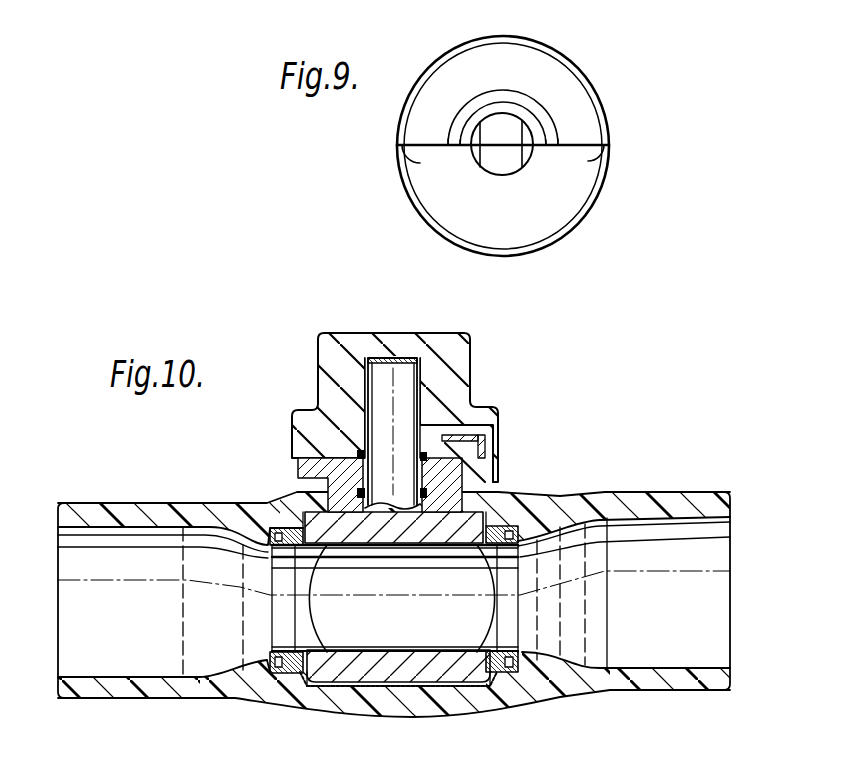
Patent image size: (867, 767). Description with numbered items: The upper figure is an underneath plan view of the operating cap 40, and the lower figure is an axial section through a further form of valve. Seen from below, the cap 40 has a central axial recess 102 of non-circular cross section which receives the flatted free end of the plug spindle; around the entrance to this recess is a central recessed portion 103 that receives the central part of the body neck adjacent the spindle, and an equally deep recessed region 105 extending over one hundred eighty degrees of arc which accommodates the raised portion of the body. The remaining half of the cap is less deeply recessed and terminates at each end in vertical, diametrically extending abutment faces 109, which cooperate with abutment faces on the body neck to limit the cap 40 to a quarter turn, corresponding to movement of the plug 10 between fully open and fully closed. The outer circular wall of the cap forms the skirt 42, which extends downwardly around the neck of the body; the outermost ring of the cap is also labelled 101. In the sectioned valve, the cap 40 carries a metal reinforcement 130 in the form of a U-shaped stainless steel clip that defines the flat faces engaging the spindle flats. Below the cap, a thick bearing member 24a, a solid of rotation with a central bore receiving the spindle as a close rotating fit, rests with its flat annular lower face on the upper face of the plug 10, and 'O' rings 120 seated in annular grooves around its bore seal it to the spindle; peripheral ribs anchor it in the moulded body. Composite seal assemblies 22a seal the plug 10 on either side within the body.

In FIG. 10, the plug 10 is at (298, 701).
In FIG. 10, the composite seal assemblies 22a is at (270, 577).
In FIG. 10, the bearing member 24a is at (460, 483).
In FIG. 9, the operating cap 40 is at (610, 120).
In FIG. 10, the operating cap 40 is at (473, 351).
In FIG. 9, the skirt 42 is at (407, 96).
In FIG. 9, the outer ring 101 is at (535, 55).
In FIG. 9, the axial recess 102 is at (496, 164).
In FIG. 9, the central recessed portion 103 is at (533, 120).
In FIG. 9, the recessed region 105 is at (565, 202).
In FIG. 9, the abutment faces 109 is at (404, 170).
In FIG. 10, the 'O' rings 120 is at (332, 486).
In FIG. 10, the metal reinforcement 130 is at (366, 372).